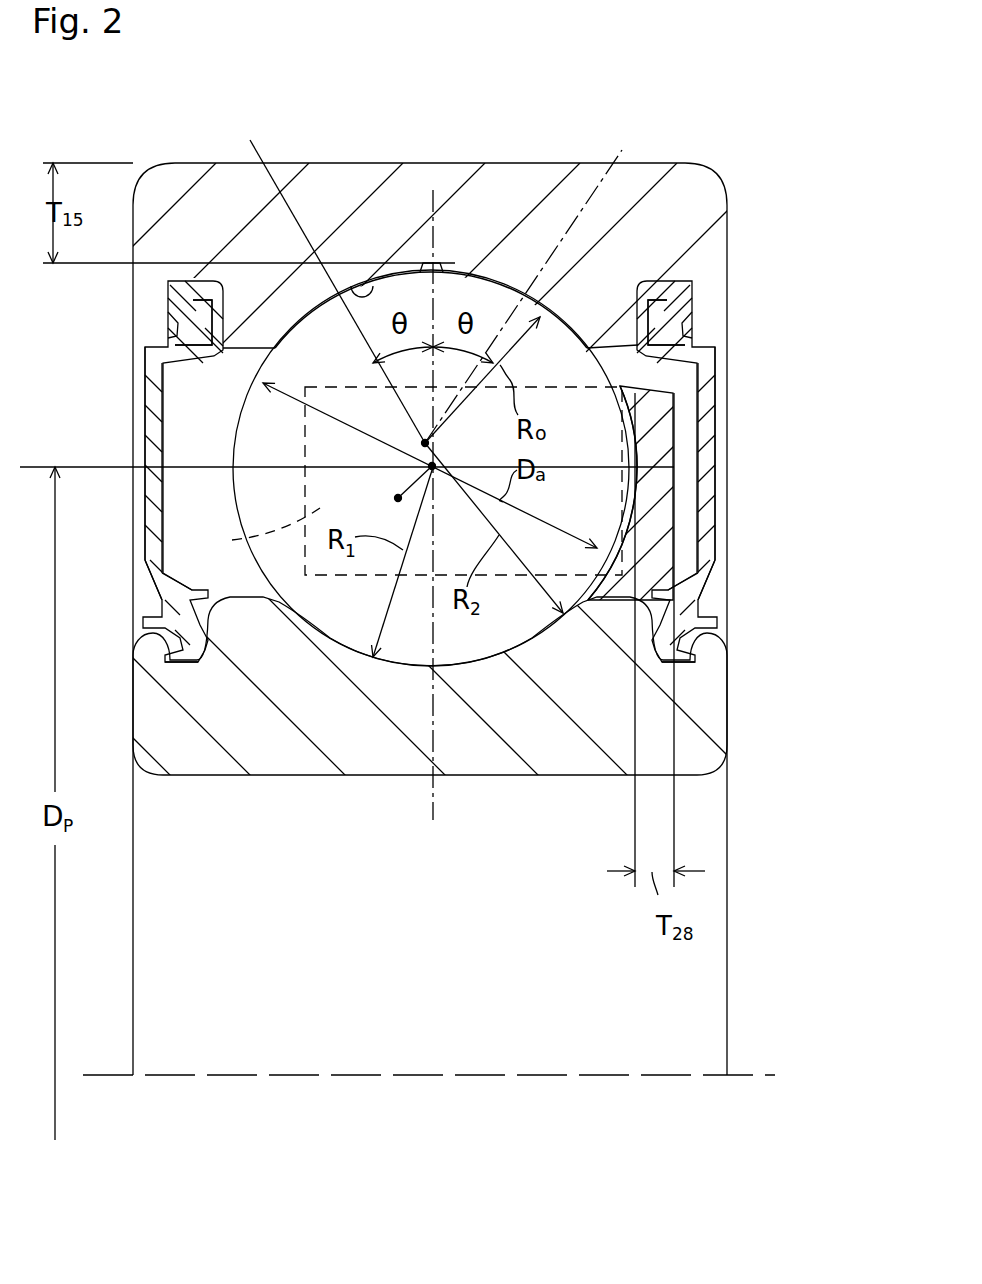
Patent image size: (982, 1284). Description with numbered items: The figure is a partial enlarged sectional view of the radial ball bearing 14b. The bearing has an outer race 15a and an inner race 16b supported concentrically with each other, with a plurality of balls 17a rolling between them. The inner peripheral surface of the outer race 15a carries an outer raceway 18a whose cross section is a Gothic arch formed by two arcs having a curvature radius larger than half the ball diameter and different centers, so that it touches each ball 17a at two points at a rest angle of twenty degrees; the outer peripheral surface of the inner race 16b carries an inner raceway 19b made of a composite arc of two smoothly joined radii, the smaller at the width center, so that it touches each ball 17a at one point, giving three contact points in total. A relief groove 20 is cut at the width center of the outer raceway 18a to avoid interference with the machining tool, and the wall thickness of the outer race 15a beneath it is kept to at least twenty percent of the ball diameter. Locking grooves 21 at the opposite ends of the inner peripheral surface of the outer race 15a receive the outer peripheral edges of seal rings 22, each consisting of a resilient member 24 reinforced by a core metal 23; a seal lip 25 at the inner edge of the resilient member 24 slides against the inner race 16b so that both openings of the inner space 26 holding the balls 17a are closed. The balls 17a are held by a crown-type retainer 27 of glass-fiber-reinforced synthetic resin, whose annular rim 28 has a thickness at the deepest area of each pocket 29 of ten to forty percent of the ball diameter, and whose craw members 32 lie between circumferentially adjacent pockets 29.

The radial ball bearing 14b is at (551, 155).
The outer race 15a is at (484, 207).
The inner race 16b is at (400, 765).
The balls 17a is at (258, 439).
The outer raceway 18a is at (364, 286).
The inner raceway 19b is at (520, 642).
The relief groove 20 is at (431, 263).
The locking grooves 21 is at (168, 292).
The seal rings 22 is at (148, 516).
The core metal 23 is at (163, 560).
The resilient member 24 is at (183, 322).
The seal lip 25 is at (160, 655).
The inner space 26 is at (185, 405).
The retainer 27 is at (696, 565).
The annular rim 28 is at (665, 478).
The pocket 29 is at (628, 478).
The craw member 32 is at (257, 535).